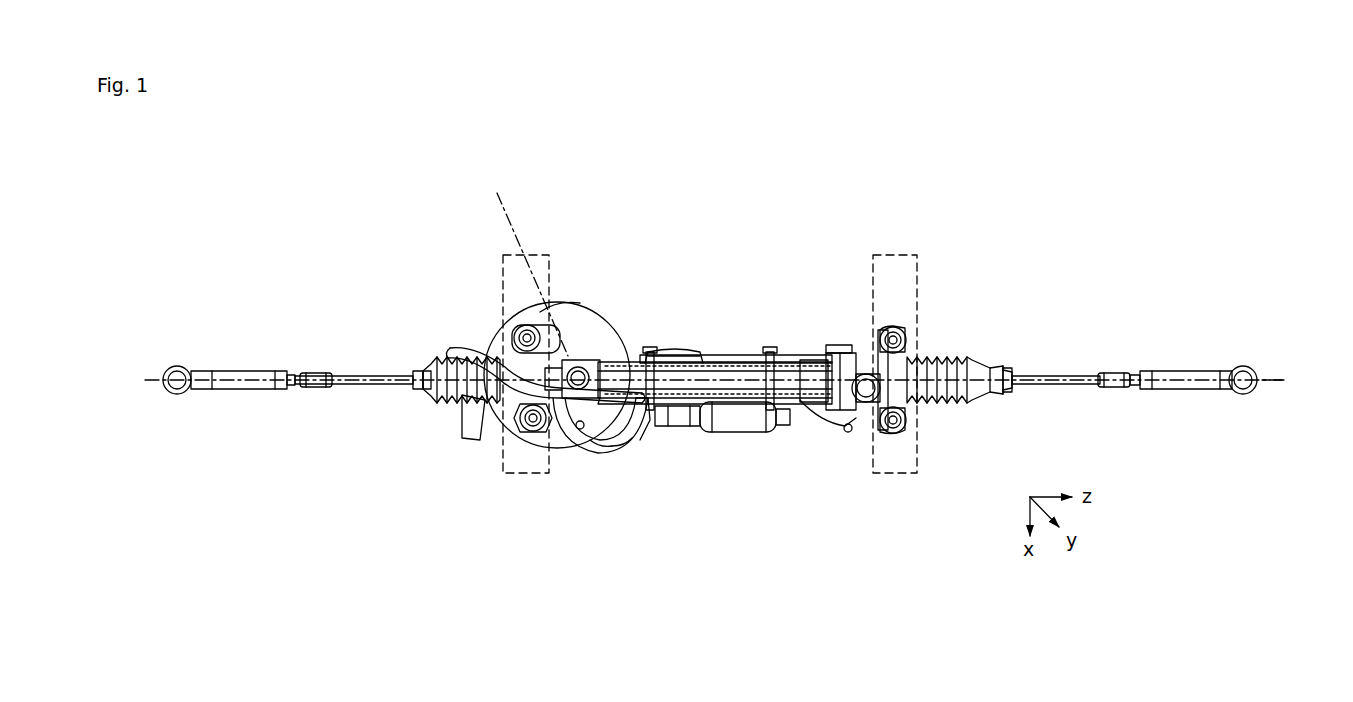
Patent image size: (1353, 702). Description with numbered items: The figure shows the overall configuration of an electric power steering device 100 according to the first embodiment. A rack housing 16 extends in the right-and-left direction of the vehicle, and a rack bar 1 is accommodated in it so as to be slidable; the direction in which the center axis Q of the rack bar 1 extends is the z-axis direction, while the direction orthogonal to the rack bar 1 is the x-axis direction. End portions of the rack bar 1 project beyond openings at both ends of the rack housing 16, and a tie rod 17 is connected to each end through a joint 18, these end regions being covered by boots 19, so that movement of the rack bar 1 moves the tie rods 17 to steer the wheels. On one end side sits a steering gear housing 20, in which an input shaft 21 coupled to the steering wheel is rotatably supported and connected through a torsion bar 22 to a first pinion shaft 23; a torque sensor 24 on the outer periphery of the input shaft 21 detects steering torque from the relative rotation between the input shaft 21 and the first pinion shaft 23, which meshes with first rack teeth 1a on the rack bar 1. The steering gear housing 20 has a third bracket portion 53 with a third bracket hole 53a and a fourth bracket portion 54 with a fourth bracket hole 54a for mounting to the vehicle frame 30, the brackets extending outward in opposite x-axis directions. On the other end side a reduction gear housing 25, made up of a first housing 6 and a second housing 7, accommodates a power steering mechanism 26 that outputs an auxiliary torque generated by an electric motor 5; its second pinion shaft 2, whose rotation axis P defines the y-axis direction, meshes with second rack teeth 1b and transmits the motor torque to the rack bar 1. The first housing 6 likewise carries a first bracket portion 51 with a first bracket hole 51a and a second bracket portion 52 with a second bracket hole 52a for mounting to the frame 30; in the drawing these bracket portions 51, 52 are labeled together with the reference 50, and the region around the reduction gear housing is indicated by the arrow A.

The electric power steering device 100 is at (976, 291).
The rack bar 1 is at (724, 376).
The first rack teeth 1a is at (816, 372).
The second rack teeth 1b is at (621, 360).
The second pinion shaft 2 is at (583, 367).
The electric motor 5 is at (742, 421).
The first housing 6 is at (582, 446).
The second housing 7 is at (604, 458).
The rack housing 16 is at (748, 362).
The tie rod 17 is at (246, 388).
The joint 18 is at (426, 366).
The boot 19 is at (440, 396).
The steering gear housing 20 is at (844, 355).
The input shaft 21 is at (905, 395).
The torsion bar 22 is at (851, 432).
The first pinion shaft 23 is at (833, 420).
The torque sensor 24 is at (829, 348).
The reduction gear housing 25 is at (634, 448).
The power steering mechanism 26 is at (617, 457).
The frame 30 is at (537, 257).
The bracket 50 is at (485, 403).
The first bracket portion 51 is at (518, 343).
The first bracket hole 51a is at (509, 335).
The second bracket portion 52 is at (552, 406).
The second bracket hole 52a is at (528, 412).
The third bracket portion 53 is at (906, 343).
The third bracket hole 53a is at (882, 346).
The fourth bracket portion 54 is at (896, 433).
The fourth bracket hole 54a is at (905, 419).
The rotation axis P is at (524, 262).
The center axis Q is at (1281, 383).
The region A is at (580, 309).